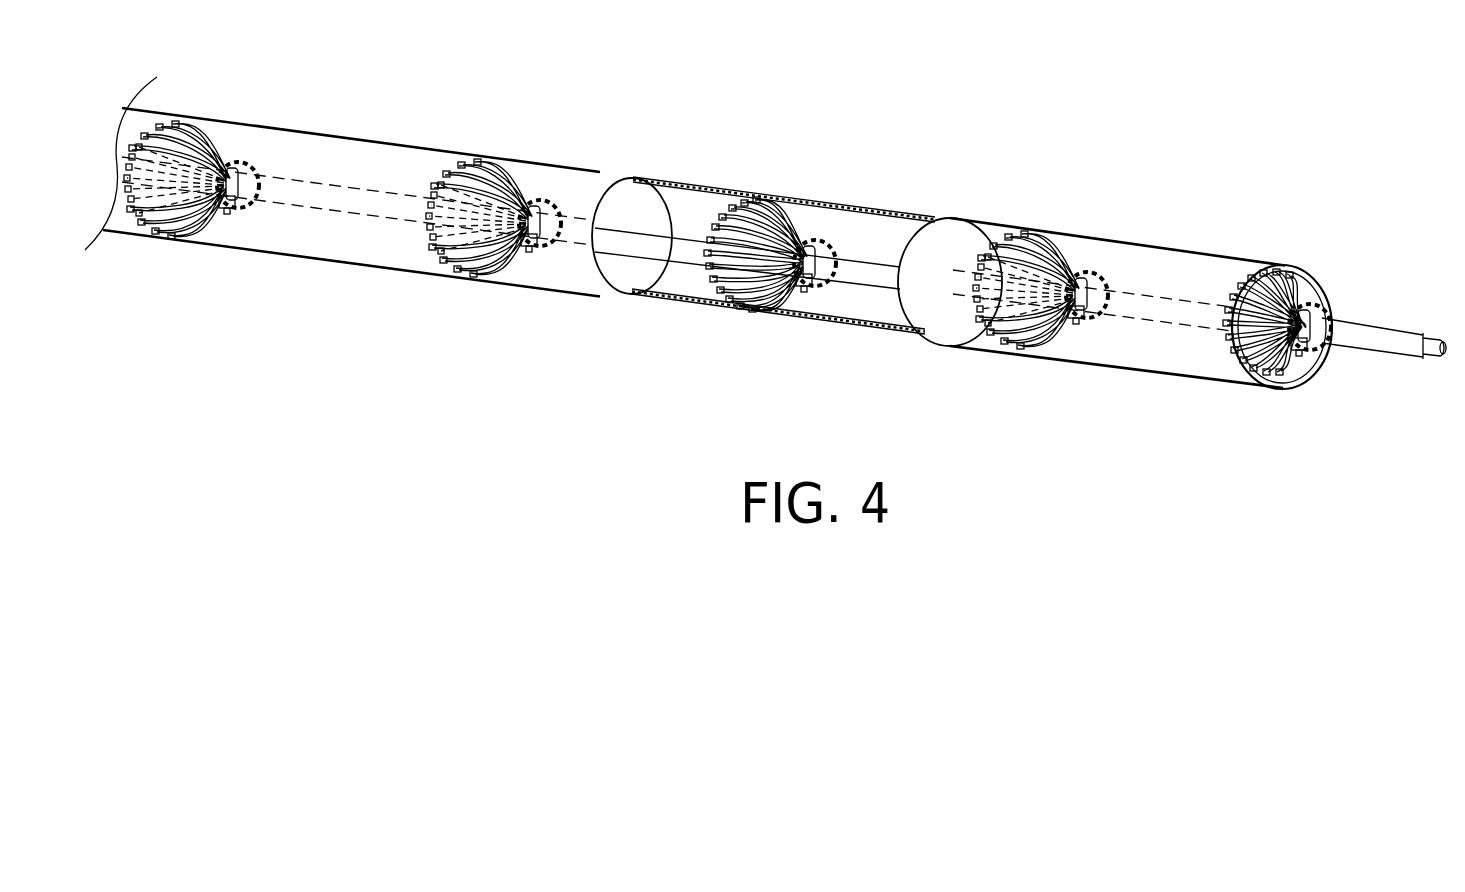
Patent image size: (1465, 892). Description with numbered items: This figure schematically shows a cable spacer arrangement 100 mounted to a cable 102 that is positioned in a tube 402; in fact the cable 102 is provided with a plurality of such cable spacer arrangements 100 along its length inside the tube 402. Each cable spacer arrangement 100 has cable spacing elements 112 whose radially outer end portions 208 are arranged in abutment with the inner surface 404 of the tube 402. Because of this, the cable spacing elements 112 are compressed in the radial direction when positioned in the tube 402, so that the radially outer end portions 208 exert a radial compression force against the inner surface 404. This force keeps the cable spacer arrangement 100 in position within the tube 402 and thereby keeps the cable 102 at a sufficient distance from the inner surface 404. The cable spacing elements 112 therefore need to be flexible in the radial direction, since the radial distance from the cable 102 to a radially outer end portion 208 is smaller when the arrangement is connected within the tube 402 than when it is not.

The cable spacer arrangement 100 is at (267, 120).
The cable 102 is at (1193, 297).
The cable spacing element 112 is at (208, 132).
The radially outer end portion 208 is at (750, 202).
The tube 402 is at (978, 213).
The inner surface 404 is at (680, 198).